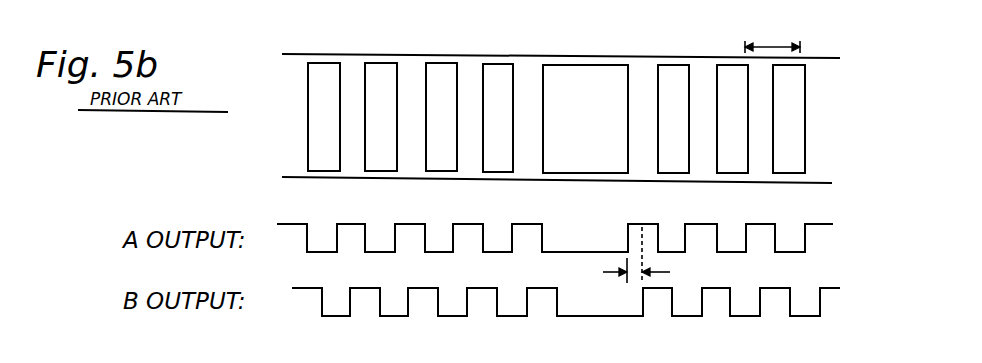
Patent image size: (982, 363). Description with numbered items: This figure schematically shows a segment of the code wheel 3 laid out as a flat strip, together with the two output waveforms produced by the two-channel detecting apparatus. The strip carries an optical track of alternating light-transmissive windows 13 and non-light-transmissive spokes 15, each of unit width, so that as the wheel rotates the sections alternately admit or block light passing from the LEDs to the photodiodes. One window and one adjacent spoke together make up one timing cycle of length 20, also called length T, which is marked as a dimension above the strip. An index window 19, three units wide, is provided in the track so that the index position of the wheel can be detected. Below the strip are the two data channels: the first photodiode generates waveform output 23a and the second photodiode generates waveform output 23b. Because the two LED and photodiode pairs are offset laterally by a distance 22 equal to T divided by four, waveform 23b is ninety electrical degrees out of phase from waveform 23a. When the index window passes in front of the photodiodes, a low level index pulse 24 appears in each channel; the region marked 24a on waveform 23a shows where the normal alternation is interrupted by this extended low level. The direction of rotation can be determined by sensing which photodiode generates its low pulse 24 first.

The code wheel 3 is at (290, 64).
The windows 13 is at (395, 118).
The spokes 15 is at (410, 83).
The index window 19 is at (600, 129).
The timing cycle length 20 is at (788, 46).
The offset distance 22 is at (634, 246).
The waveform output 23a is at (831, 226).
The waveform output 23b is at (832, 292).
The low level index pulse 24 is at (590, 254).
The missing pulse in A output 24a is at (541, 241).